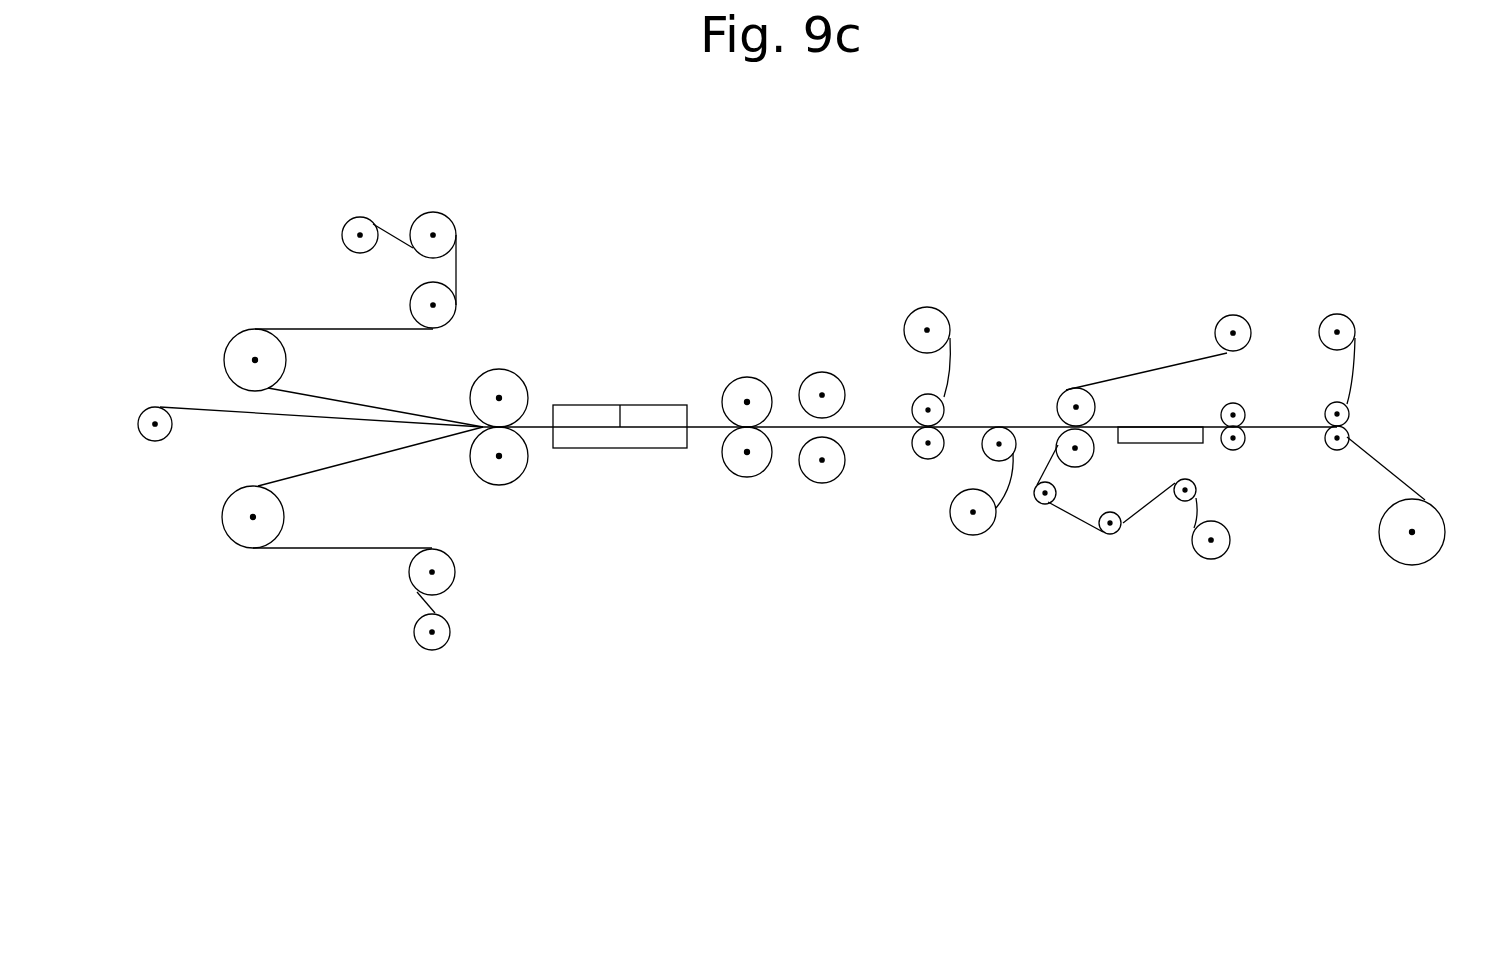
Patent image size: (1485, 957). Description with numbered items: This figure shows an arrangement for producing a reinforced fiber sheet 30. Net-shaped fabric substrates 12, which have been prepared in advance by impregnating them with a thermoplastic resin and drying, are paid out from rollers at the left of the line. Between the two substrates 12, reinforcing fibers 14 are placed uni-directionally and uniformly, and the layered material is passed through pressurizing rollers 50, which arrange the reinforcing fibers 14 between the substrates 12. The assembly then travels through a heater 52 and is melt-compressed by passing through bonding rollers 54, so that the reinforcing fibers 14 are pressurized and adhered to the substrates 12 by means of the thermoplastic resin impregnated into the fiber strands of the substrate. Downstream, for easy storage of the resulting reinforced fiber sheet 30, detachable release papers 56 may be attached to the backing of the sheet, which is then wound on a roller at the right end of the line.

The net-shaped fabric substrate 12 is at (298, 328).
The reinforcing fibers 14 is at (181, 407).
The reinforced fiber sheet 30 is at (1393, 467).
The pressurizing rollers 50 is at (499, 368).
The heater 52 is at (637, 404).
The bonding rollers 54 is at (744, 377).
The release papers 56 is at (1137, 368).